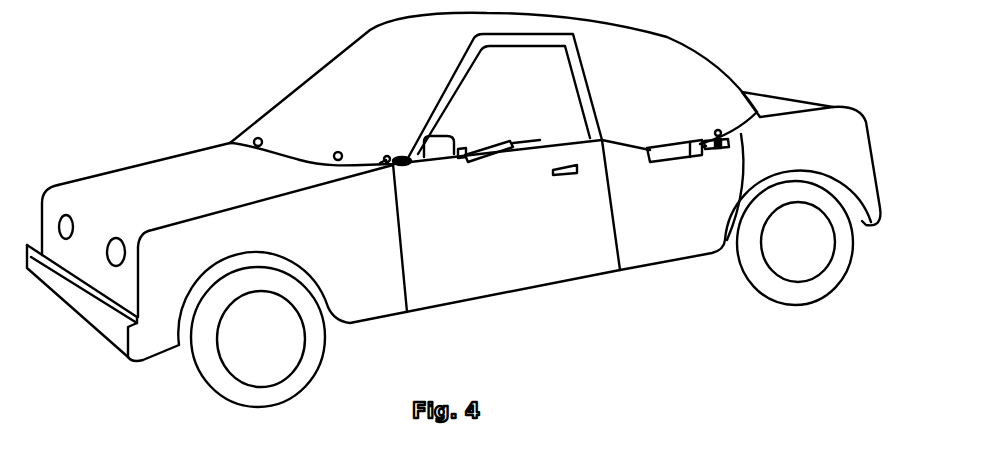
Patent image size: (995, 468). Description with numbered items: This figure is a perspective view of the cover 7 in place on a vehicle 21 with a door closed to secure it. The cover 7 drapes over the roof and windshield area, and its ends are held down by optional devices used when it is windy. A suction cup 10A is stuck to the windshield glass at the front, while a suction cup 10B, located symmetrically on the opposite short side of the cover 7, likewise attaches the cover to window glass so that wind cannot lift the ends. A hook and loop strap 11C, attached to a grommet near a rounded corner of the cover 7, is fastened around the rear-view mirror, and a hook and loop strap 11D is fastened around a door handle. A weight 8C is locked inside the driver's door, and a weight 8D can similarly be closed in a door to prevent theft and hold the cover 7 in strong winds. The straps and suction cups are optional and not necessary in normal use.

The cover 7 is at (382, 48).
The vehicle 21 is at (197, 163).
The suction cup 10A is at (262, 139).
The suction cup 10B is at (345, 161).
The hook and loop strap 11C is at (396, 168).
The weight 8C is at (476, 156).
The weight 8D is at (676, 164).
The hook and loop strap 11D is at (719, 130).